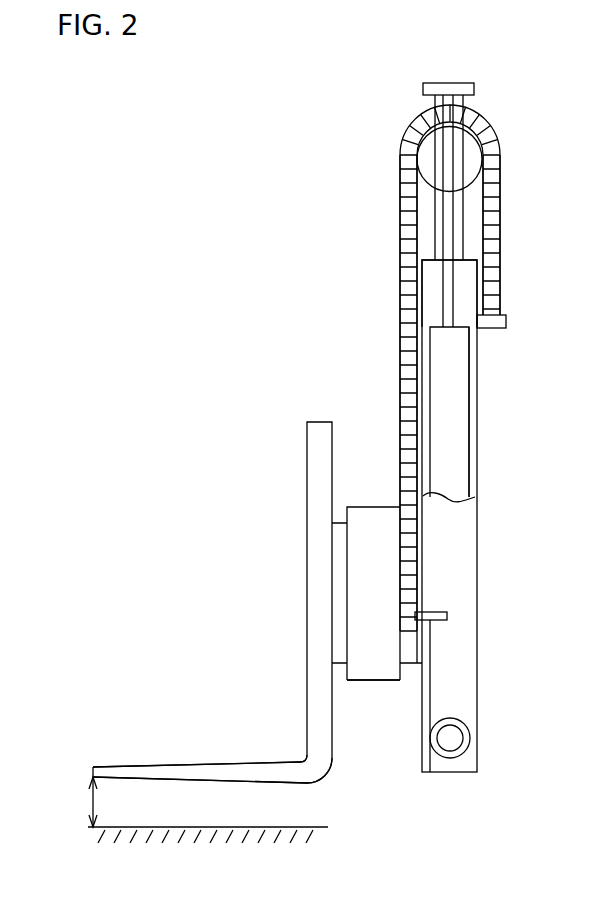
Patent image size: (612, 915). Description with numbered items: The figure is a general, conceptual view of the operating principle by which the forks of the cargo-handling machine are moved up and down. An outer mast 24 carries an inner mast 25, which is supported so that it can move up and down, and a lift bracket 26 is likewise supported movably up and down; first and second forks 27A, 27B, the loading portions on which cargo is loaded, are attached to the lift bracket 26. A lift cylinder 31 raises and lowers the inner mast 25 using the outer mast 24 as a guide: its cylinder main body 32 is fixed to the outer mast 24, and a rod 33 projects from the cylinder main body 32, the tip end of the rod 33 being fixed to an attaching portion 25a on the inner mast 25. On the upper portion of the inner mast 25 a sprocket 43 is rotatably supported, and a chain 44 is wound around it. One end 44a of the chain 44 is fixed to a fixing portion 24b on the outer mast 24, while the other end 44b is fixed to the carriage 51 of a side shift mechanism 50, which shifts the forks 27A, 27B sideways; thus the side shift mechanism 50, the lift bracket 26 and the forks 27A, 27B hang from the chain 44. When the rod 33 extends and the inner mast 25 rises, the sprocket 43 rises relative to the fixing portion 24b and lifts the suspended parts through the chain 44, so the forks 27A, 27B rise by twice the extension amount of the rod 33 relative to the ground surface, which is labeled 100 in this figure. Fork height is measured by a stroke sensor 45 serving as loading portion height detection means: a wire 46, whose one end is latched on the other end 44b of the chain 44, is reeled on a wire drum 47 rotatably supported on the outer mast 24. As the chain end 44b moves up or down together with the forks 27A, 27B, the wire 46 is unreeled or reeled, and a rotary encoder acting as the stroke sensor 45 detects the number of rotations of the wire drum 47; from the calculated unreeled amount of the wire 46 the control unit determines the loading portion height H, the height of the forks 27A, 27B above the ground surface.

The outer mast 24 is at (462, 648).
The fixing portion 24b is at (495, 328).
The inner mast 25 is at (463, 100).
The attaching portion 25a is at (458, 83).
The lift bracket 26 is at (340, 583).
The first fork 27A is at (192, 770).
The second fork 27B is at (212, 769).
The lift cylinder 31 is at (470, 380).
The cylinder main body 32 is at (469, 450).
The rod 33 is at (455, 272).
The sprocket 43 is at (433, 152).
The chain 44 is at (397, 217).
The one end of the chain 44a is at (498, 297).
The other end of the chain 44b is at (408, 572).
The stroke sensor 45 is at (442, 753).
The wire 46 is at (432, 678).
The wire drum 47 is at (470, 738).
The side shift mechanism 50 is at (383, 686).
The carriage 51 is at (372, 525).
The ground 100 is at (223, 825).
The loading portion height H is at (90, 800).